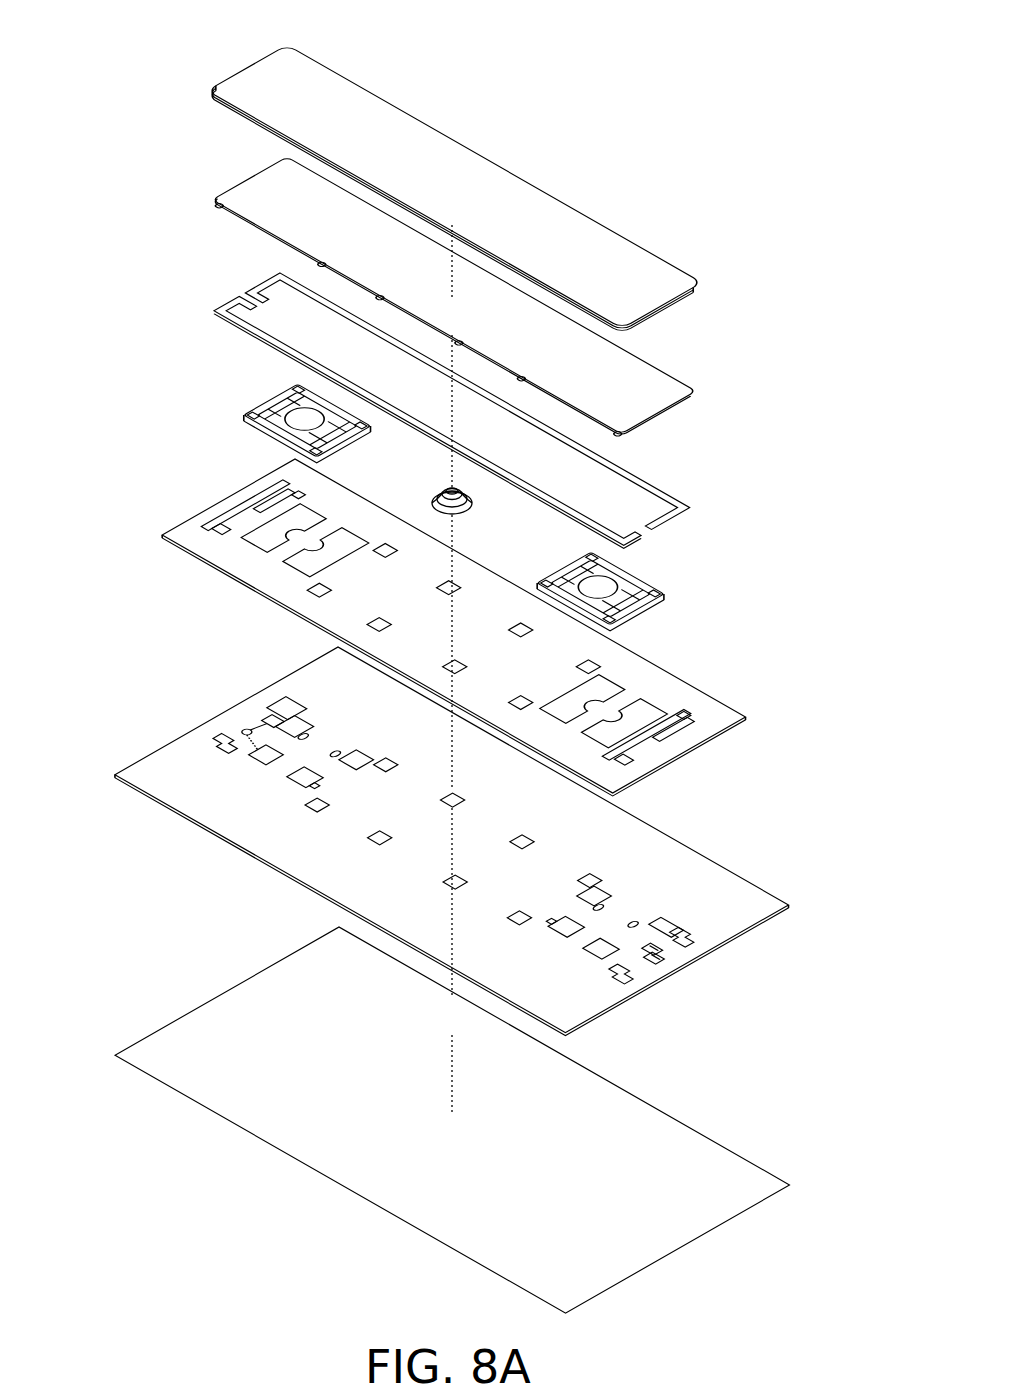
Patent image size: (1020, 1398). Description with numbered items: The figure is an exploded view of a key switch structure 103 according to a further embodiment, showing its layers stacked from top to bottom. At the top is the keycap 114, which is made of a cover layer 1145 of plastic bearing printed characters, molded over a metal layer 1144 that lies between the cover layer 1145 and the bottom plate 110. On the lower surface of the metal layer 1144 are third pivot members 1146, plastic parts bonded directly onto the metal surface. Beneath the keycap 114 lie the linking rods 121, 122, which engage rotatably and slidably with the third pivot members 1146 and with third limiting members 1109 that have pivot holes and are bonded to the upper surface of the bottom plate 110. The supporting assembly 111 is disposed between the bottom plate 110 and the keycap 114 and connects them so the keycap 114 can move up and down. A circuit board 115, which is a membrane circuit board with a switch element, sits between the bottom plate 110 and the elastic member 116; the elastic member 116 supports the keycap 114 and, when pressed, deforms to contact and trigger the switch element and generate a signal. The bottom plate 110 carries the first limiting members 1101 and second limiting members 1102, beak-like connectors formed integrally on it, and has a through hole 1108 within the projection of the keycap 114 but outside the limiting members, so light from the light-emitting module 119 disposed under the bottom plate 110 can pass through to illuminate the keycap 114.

The key switch structure 103 is at (57, 34).
The bottom plate 110 is at (475, 841).
The supporting assembly 111 is at (647, 612).
The keycap 114 is at (496, 252).
The circuit board 115 is at (700, 674).
The elastic member 116 is at (473, 513).
The light-emitting module 119 is at (712, 1108).
The linking rod 121 is at (513, 415).
The linking rod 122 is at (668, 542).
The first limiting member 1101 is at (295, 703).
The second limiting member 1102 is at (245, 730).
The through hole 1108 is at (668, 925).
The third limiting member 1109 is at (660, 947).
The metal layer 1144 is at (696, 390).
The cover layer 1145 is at (695, 290).
The third pivot member 1146 is at (217, 211).